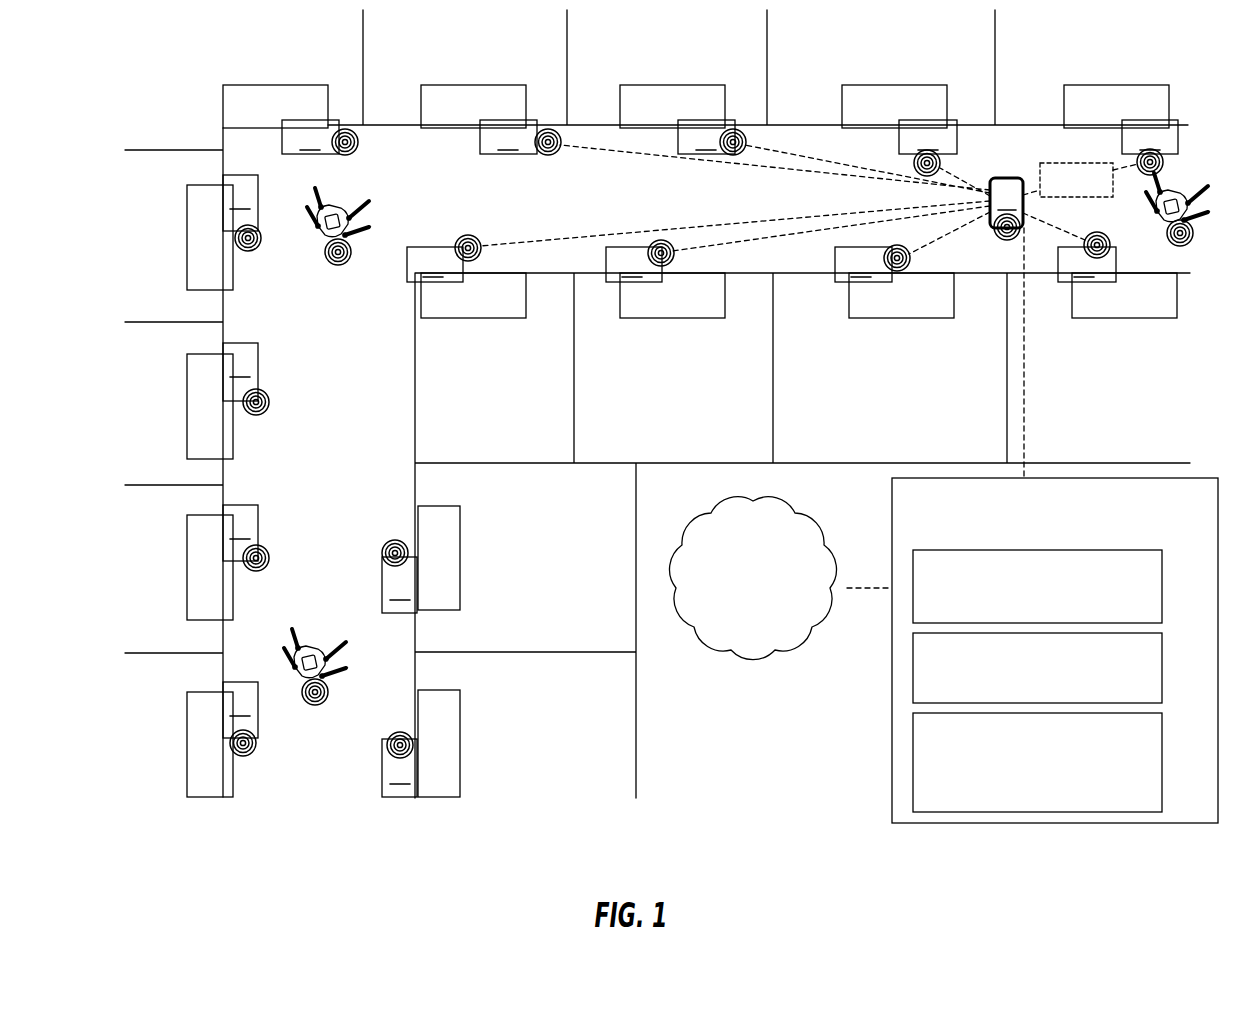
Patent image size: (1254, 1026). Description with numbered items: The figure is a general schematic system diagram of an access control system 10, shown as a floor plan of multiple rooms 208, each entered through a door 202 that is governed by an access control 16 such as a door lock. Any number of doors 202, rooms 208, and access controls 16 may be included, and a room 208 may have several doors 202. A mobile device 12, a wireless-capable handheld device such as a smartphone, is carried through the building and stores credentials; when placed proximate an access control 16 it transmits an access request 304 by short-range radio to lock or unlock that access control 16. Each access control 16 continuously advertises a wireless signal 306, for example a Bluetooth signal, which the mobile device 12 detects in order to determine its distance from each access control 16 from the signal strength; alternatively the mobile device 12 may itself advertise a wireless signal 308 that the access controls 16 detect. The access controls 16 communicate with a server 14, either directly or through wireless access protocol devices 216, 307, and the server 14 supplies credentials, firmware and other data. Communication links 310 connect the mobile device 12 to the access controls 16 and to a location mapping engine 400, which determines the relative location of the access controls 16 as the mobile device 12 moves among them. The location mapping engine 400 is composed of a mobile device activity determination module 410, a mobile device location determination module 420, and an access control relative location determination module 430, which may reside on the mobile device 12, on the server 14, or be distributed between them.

The access control system 10 is at (148, 62).
The mobile device 12 is at (1006, 203).
The server 14 is at (742, 602).
The access control 16 is at (700, 458).
The door 202 is at (237, 85).
The room 208 is at (260, 49).
The wireless access protocol device 216 is at (336, 205).
The access request 304 is at (1050, 163).
The wireless signal 306 is at (358, 141).
The wireless access protocol device 307 is at (343, 265).
The wireless signal 308 is at (1007, 241).
The communication links 310 is at (850, 378).
The location mapping engine 400 is at (982, 478).
The mobile device activity determination module 410 is at (1162, 595).
The mobile device location determination module 420 is at (1162, 670).
The access control relative location determination module 430 is at (1162, 748).